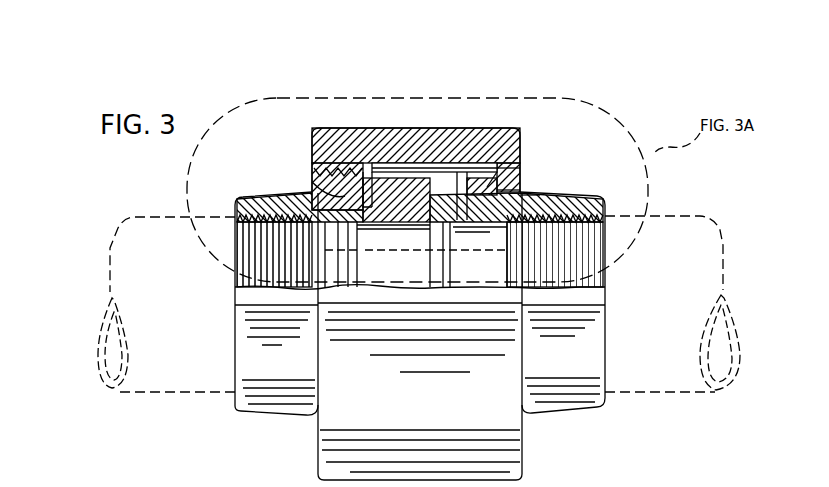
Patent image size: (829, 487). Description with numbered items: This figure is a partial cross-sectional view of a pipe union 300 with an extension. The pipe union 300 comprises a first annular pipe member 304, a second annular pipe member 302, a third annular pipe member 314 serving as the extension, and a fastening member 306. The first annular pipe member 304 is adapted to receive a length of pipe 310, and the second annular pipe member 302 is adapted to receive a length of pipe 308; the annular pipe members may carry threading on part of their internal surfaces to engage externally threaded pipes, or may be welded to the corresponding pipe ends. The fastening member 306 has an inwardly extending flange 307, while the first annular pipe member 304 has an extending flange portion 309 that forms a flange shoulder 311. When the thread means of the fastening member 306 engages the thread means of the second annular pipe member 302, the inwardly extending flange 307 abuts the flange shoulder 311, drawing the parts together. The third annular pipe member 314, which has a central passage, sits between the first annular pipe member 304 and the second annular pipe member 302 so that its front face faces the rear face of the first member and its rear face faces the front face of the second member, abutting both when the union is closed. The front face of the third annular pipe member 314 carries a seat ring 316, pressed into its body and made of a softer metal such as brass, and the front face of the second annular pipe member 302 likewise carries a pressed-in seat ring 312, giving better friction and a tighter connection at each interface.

The pipe union 300 is at (263, 428).
The second annular pipe member 302 is at (253, 352).
The first annular pipe member 304 is at (553, 368).
The fastening member 306 is at (387, 128).
The inwardly extending flange 307 is at (527, 190).
The length of pipe 308 is at (112, 248).
The extending flange portion 309 is at (555, 178).
The length of pipe 310 is at (698, 220).
The flange shoulder 311 is at (521, 168).
The seat ring 312 is at (312, 192).
The third annular pipe member 314 is at (450, 165).
The seat ring 316 is at (486, 176).